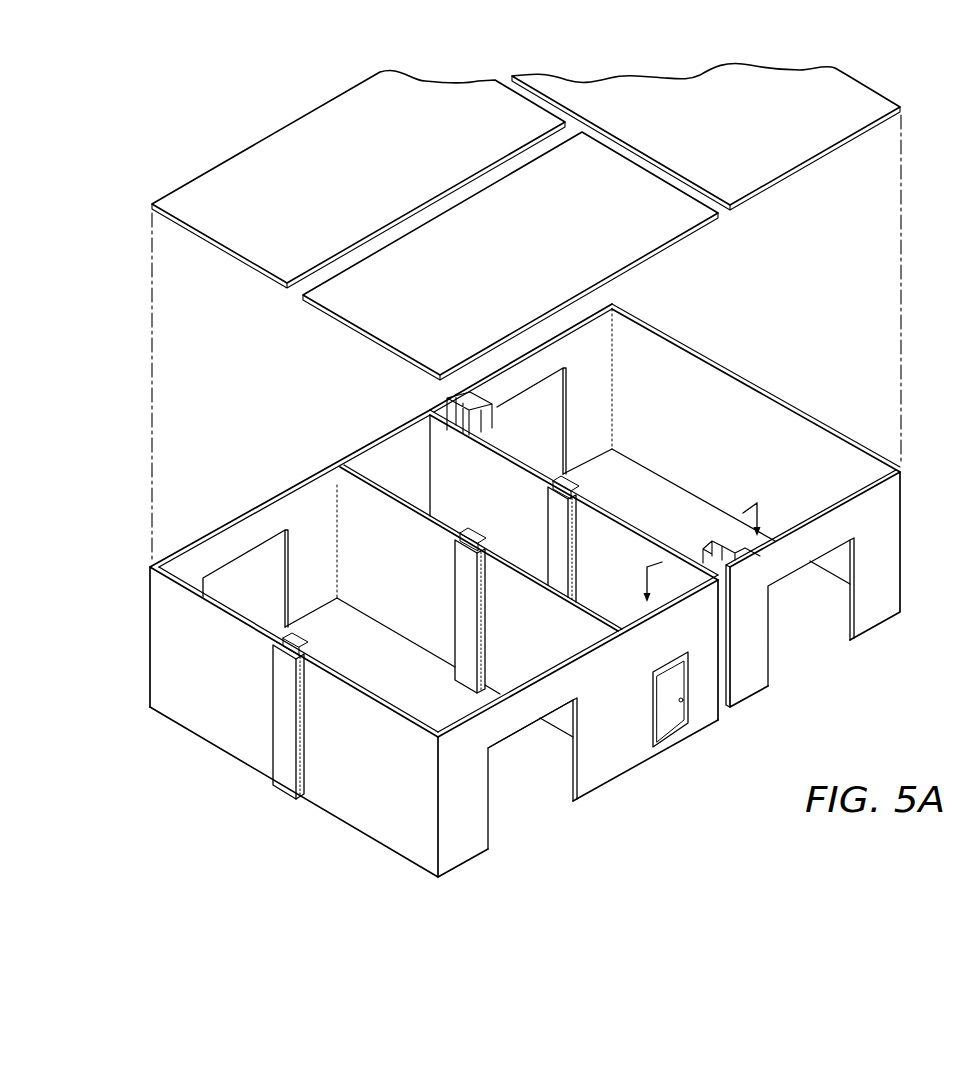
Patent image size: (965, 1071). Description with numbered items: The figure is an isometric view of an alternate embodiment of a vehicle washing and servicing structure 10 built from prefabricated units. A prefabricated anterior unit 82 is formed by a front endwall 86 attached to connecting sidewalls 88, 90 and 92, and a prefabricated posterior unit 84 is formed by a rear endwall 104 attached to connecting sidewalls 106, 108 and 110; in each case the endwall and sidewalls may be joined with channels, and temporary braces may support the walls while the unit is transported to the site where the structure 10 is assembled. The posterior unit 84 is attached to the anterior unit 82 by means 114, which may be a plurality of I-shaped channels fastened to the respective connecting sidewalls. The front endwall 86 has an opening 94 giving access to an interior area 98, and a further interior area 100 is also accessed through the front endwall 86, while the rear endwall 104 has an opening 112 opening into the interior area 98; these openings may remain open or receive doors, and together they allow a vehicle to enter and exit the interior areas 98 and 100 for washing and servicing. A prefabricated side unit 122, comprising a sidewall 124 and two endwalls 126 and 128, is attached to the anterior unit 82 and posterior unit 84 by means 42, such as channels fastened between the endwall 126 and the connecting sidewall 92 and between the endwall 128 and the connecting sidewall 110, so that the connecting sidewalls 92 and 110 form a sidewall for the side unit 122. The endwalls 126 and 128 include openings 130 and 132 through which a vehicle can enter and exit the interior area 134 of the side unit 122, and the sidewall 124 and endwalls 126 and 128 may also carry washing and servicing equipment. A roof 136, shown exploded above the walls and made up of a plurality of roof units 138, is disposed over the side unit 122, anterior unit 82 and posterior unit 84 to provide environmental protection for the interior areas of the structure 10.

The structure 10 is at (706, 818).
The means for attaching side unit 42 is at (439, 399).
The prefabricated anterior unit 82 is at (296, 832).
The prefabricated posterior unit 84 is at (159, 786).
The front endwall 86 is at (610, 777).
The connecting sidewall 88 is at (367, 832).
The connecting sidewall 90 is at (553, 734).
The connecting sidewall 92 is at (595, 498).
The opening 94 is at (545, 831).
The interior area 98 is at (402, 694).
The interior area 100 is at (447, 492).
The rear endwall 104 is at (284, 490).
The connecting sidewall 106 is at (165, 715).
The connecting sidewall 108 is at (390, 632).
The connecting sidewall 110 is at (530, 460).
The opening 112 is at (233, 601).
The means for attaching posterior unit to anterior unit 114 is at (540, 513).
The prefabricated side unit 122 is at (857, 691).
The sidewall 124 is at (783, 398).
The endwall 126 is at (880, 623).
The endwall 128 is at (610, 304).
The opening 130 is at (834, 637).
The opening 132 is at (509, 436).
The interior area 134 is at (644, 517).
The roof 136 is at (199, 121).
The roof units 138 is at (290, 122).